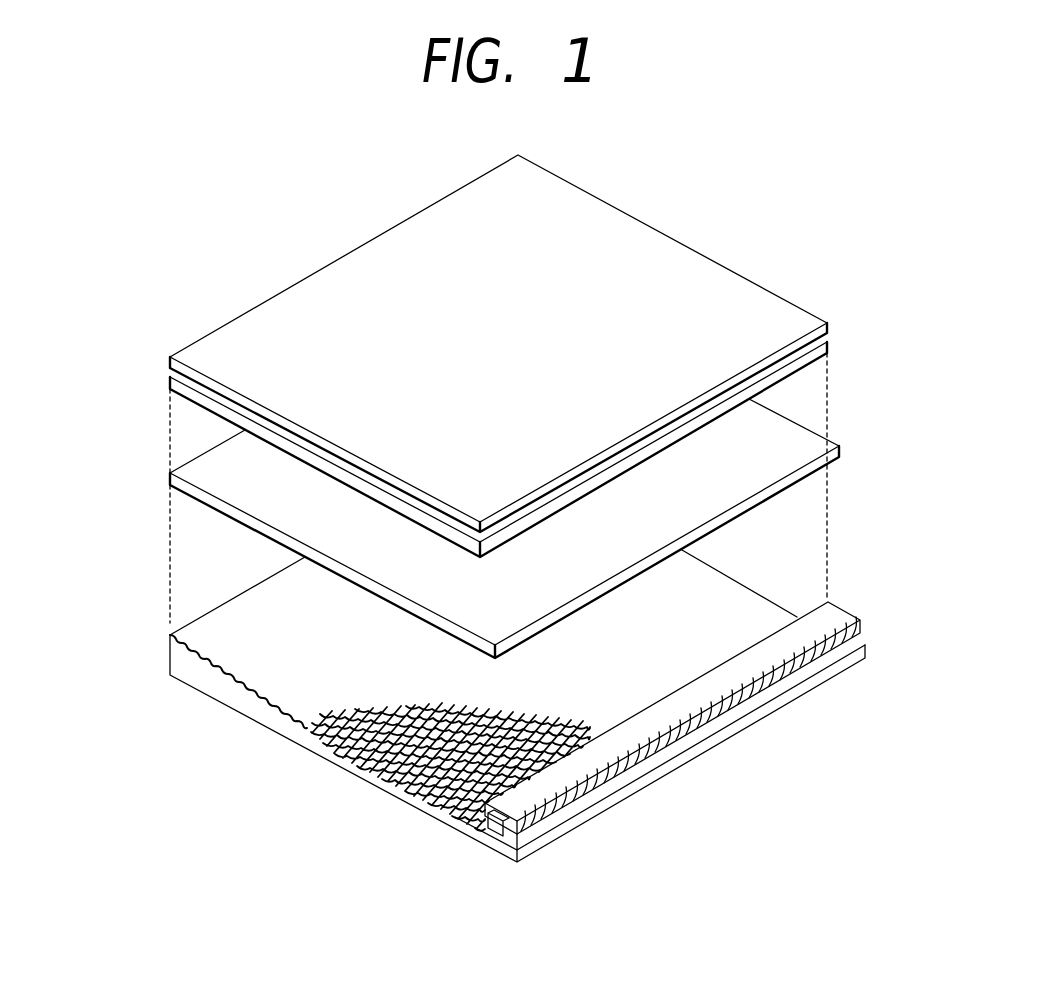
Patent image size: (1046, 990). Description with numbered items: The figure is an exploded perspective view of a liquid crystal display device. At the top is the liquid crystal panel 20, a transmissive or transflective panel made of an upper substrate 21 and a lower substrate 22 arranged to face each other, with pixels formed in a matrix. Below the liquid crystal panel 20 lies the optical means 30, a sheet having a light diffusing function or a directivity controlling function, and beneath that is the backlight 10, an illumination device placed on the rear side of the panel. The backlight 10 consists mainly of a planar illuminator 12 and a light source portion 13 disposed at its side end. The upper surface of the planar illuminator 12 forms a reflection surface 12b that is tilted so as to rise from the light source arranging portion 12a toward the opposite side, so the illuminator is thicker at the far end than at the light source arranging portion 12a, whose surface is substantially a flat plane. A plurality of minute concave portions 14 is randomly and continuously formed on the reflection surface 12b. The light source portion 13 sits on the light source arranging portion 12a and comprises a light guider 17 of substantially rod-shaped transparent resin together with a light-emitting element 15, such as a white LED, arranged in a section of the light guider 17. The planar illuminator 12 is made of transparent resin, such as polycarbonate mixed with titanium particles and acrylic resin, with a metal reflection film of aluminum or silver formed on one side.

The backlight 10 is at (491, 715).
The planar illuminator 12 is at (182, 670).
The light source arranging portion 12a is at (585, 800).
The reflection surface 12b is at (215, 642).
The light source portion 13 is at (830, 607).
The minute concave portions 14 is at (365, 777).
The light-emitting element 15 is at (492, 832).
The light guider 17 is at (528, 826).
The liquid crystal panel 20 is at (452, 356).
The upper substrate 21 is at (170, 360).
The lower substrate 22 is at (170, 383).
The optical means 30 is at (205, 470).